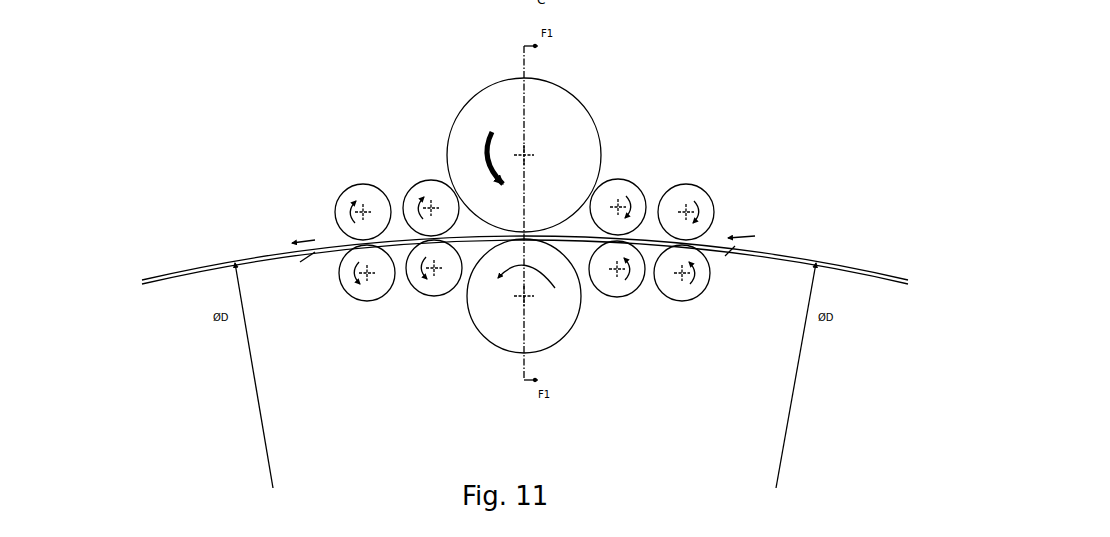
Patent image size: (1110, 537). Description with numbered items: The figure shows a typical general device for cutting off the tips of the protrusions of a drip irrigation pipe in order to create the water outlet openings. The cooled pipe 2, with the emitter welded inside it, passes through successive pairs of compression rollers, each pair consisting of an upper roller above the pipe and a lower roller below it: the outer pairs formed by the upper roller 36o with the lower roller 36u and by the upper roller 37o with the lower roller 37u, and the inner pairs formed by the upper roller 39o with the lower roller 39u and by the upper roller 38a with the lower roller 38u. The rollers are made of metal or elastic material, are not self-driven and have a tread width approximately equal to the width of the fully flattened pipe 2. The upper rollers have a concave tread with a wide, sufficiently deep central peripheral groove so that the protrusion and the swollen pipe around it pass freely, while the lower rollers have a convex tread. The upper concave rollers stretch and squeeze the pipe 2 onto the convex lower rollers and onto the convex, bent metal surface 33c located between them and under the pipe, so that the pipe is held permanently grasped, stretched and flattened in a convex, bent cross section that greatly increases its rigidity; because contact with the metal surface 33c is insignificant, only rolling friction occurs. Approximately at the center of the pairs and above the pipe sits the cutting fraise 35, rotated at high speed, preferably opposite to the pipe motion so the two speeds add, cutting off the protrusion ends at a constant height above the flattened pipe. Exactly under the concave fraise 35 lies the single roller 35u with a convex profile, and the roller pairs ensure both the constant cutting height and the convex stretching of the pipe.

The pipe 2 is at (758, 247).
The convex and bent metal surface 33c is at (331, 258).
The cutting fraise 35 is at (582, 97).
The single roller with convex profile 35u is at (570, 332).
The upper compression roller 37o is at (355, 185).
The upper compression roller 39o is at (417, 182).
The upper inner right roller 38a is at (625, 180).
The upper compression roller 36o is at (690, 185).
The lower compression roller 37u is at (352, 300).
The lower compression roller 39u is at (424, 295).
The lower compression roller 38u is at (622, 296).
The lower compression roller 36u is at (690, 300).